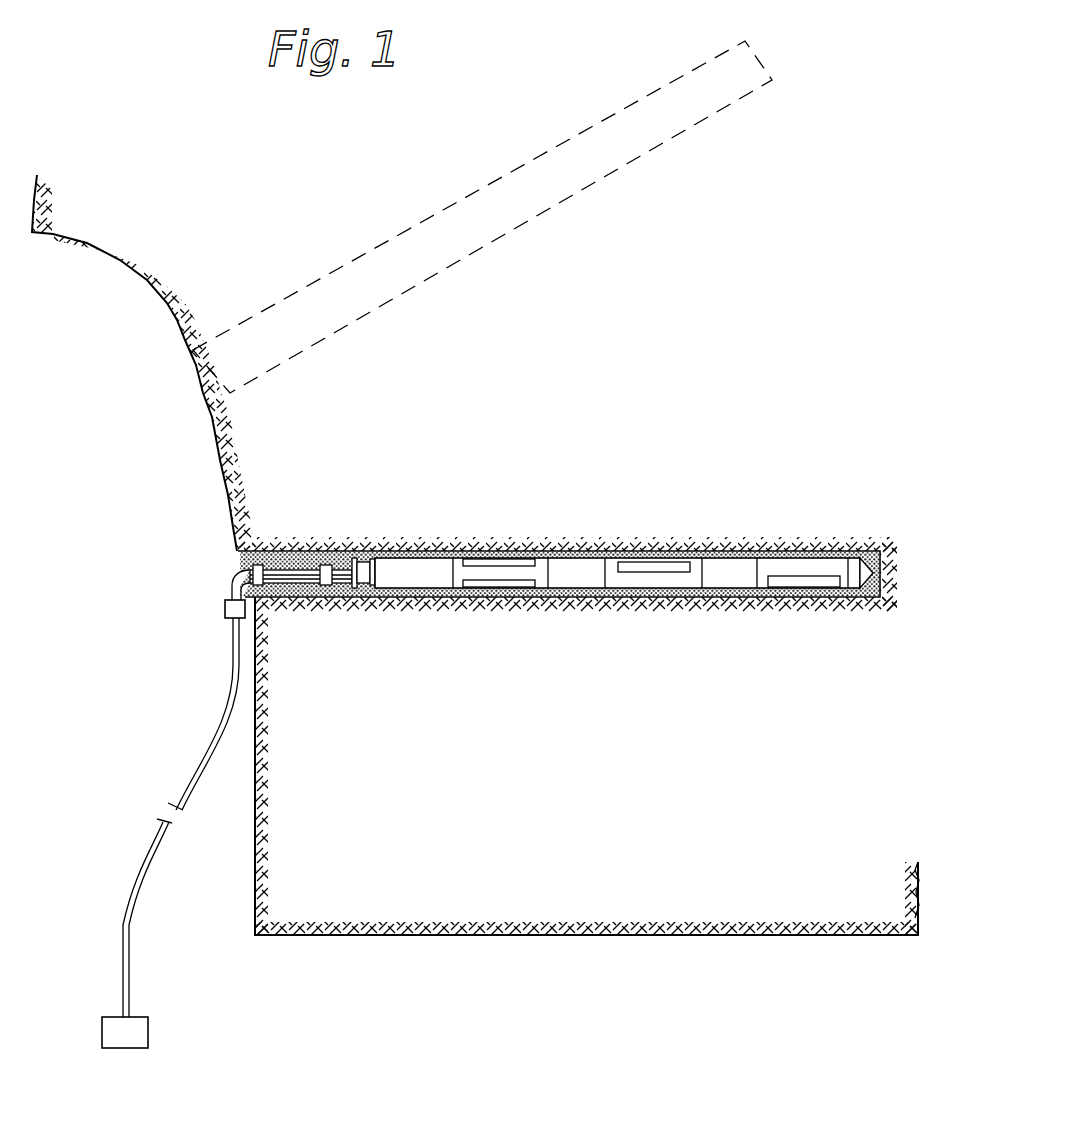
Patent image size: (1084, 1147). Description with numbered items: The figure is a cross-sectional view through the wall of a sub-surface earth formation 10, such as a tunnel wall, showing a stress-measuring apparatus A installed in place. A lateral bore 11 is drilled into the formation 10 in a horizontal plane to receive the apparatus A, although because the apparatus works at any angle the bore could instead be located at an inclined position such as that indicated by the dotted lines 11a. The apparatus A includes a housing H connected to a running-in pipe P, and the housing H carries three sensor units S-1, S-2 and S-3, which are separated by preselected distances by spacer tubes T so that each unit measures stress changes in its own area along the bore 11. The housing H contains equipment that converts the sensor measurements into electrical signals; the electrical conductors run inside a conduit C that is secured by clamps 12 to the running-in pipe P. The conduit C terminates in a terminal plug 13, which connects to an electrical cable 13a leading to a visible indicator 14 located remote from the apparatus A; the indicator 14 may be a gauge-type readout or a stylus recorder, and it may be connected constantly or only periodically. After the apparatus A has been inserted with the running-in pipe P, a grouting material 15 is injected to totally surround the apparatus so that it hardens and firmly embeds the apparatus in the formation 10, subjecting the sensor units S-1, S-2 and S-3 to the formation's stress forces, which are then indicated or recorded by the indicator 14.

The underground formation 10 is at (278, 452).
The lateral bore 11 is at (612, 573).
The dotted lines 11a is at (528, 162).
The clamps 12 is at (328, 556).
The terminal plug 13 is at (224, 608).
The electrical cable 13a is at (182, 787).
The visible indicator 14 is at (125, 1048).
The grouting material 15 is at (456, 590).
The running-in pipe P is at (293, 568).
The conduit C is at (237, 580).
The housing H is at (401, 591).
The spacer tubes T is at (561, 560).
The stress-measuring apparatus A is at (580, 571).
The sensor unit S-1 is at (511, 584).
The sensor unit S-2 is at (633, 584).
The sensor unit S-3 is at (801, 588).